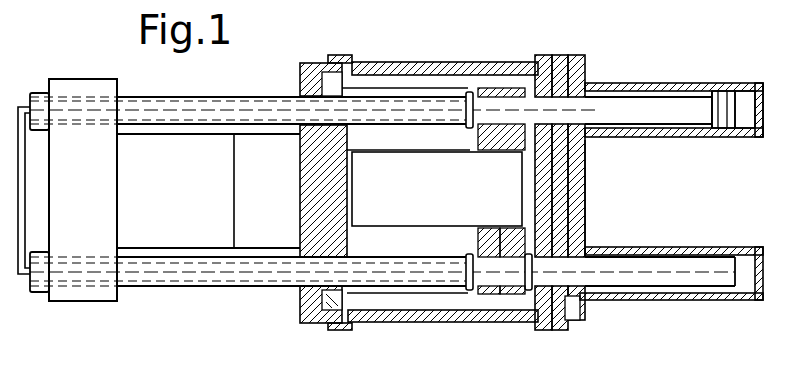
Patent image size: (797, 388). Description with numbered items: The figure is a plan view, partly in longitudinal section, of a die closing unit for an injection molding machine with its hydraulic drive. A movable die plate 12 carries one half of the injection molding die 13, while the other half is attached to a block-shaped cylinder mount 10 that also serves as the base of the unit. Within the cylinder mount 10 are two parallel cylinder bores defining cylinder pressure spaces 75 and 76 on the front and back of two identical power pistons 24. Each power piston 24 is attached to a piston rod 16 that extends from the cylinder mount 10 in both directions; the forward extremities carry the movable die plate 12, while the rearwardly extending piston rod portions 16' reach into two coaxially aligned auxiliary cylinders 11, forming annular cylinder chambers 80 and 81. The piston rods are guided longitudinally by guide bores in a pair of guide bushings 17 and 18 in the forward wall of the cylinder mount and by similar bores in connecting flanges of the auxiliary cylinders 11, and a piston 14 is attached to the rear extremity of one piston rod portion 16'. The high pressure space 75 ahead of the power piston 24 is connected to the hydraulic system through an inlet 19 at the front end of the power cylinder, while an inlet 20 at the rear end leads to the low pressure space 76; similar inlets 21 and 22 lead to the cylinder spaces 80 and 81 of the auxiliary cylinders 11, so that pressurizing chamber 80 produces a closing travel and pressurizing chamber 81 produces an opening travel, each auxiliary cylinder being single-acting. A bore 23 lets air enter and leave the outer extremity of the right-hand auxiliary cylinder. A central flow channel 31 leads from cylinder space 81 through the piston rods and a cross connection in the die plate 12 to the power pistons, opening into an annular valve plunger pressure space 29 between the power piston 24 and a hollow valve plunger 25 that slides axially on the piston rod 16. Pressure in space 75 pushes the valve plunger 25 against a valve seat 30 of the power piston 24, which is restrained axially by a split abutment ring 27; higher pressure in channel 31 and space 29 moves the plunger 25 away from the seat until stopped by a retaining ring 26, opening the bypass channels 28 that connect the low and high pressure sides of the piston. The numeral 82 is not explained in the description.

The cylinder mount 10 is at (335, 196).
The auxiliary cylinder 11 is at (576, 152).
The movable die plate 12 is at (103, 167).
The injection molding die 13 is at (277, 220).
The piston 14 is at (733, 88).
The piston rod 16 is at (249, 216).
The piston rod portion 16' is at (671, 204).
The guide bushing 17 is at (318, 63).
The guide bushing 18 is at (318, 293).
The inlet 19 is at (348, 58).
The inlet 20 is at (546, 58).
The inlet 21 is at (585, 58).
The inlet 22 is at (576, 302).
The bore 23 is at (762, 108).
The power piston 24 is at (490, 240).
The valve plunger 25 is at (482, 303).
The retaining ring 26 is at (465, 285).
The split abutment ring 27 is at (522, 294).
The bypass channel 28 is at (532, 242).
The valve plunger pressure space 29 is at (495, 238).
The valve seat 30 is at (480, 246).
The central flow channel 31 is at (80, 106).
The cylinder pressure space 75 is at (418, 90).
The cylinder pressure space 76 is at (537, 88).
The annular cylinder chamber 80 is at (683, 130).
The annular cylinder chamber 81 is at (635, 288).
The nut 82 is at (747, 122).